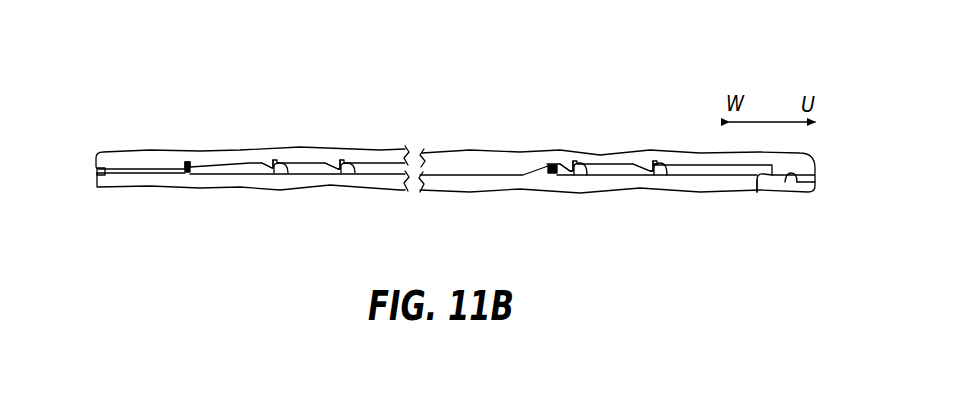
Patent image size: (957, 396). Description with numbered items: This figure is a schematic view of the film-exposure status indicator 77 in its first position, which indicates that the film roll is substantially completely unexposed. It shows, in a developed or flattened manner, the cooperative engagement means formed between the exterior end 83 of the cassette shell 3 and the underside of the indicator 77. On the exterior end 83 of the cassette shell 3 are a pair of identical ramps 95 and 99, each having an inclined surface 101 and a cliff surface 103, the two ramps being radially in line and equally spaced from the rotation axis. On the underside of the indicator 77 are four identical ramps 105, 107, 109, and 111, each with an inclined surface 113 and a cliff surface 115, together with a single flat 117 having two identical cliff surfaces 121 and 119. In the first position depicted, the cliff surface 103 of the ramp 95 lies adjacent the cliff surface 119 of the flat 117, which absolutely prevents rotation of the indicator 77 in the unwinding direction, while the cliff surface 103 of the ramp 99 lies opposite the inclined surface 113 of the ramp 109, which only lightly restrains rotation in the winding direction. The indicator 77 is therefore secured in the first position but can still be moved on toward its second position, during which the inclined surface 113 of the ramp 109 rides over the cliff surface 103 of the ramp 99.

The cassette shell 3 is at (100, 187).
The film-exposure status indicator 77 is at (118, 148).
The exterior end 83 is at (141, 169).
The ramp 95 is at (200, 178).
The ramp 99 is at (539, 180).
The inclined surface 101 is at (198, 167).
The cliff surface 103 is at (188, 170).
The ramp 105 is at (262, 161).
The ramp 107 is at (338, 161).
The ramp 109 is at (567, 160).
The ramp 111 is at (645, 161).
The inclined surface 113 is at (256, 174).
The cliff surface 115 is at (288, 173).
The flat 117 is at (98, 173).
The cliff surface 119 is at (186, 163).
The cliff surface 121 is at (762, 193).